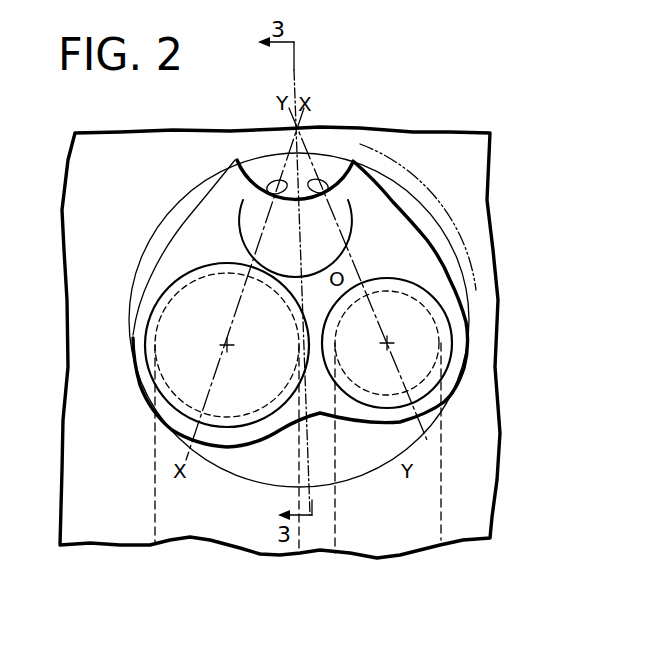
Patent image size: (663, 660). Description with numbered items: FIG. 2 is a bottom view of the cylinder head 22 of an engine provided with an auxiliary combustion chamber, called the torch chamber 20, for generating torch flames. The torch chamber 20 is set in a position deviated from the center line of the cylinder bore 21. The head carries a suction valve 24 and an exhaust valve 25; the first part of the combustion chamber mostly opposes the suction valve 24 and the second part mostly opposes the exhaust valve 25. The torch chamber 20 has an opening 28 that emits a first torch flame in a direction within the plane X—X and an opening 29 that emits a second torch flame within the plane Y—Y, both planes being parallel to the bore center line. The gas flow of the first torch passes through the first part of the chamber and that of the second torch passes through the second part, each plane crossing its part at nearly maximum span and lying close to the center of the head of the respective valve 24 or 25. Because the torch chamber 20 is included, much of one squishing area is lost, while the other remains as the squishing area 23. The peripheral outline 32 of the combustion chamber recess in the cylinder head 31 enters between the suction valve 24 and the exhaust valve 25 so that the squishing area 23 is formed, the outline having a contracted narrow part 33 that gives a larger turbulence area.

The torch chamber 20 is at (338, 160).
The cylinder bore 21 is at (417, 198).
The cylinder head 22 is at (487, 300).
The squishing area 23 is at (328, 442).
The suction valve 24 is at (172, 380).
The exhaust valve 25 is at (423, 330).
The opening 28 is at (270, 177).
The opening 29 is at (343, 183).
The cylinder head 31 is at (407, 250).
The peripheral outline 32 is at (390, 203).
The contracted narrow part 33 is at (298, 448).